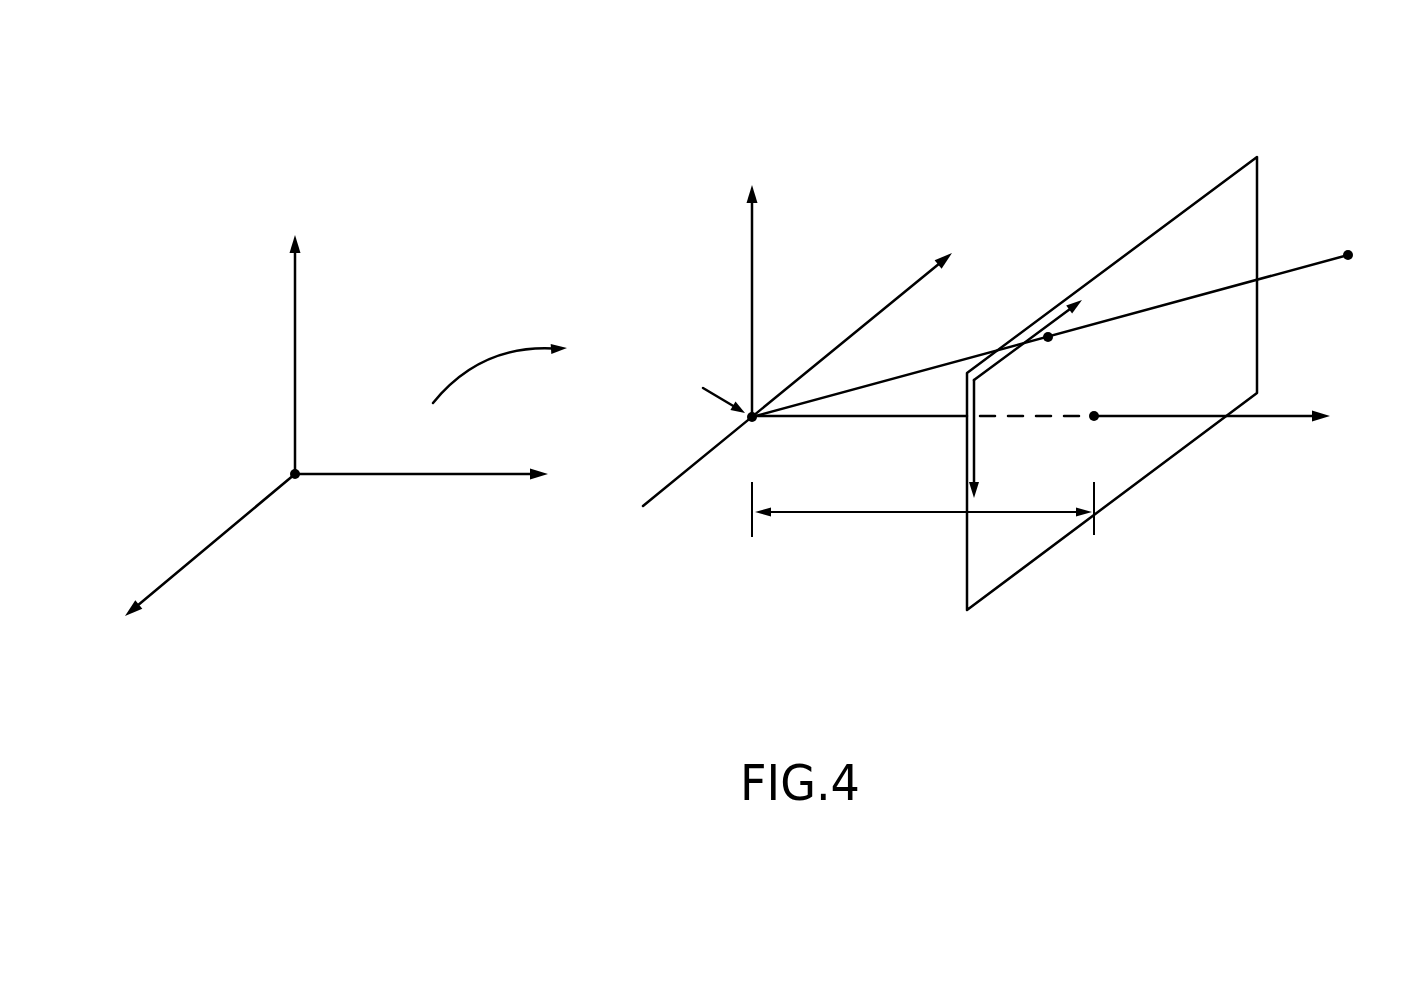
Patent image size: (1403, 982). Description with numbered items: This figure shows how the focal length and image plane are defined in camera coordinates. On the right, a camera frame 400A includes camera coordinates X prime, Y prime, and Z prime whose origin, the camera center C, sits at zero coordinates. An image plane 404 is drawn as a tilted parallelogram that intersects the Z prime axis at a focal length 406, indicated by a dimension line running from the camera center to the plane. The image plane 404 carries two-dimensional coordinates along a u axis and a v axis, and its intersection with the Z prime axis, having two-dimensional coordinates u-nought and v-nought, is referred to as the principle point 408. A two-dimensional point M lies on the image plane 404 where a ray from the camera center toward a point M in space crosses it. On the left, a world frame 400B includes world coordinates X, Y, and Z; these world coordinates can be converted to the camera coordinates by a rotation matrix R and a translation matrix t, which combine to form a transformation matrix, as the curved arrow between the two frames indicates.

The camera frame 400A is at (996, 352).
The world frame 400B is at (366, 262).
The image plane 404 is at (1050, 548).
The focal length 406 is at (882, 510).
The principle point 408 is at (1095, 416).